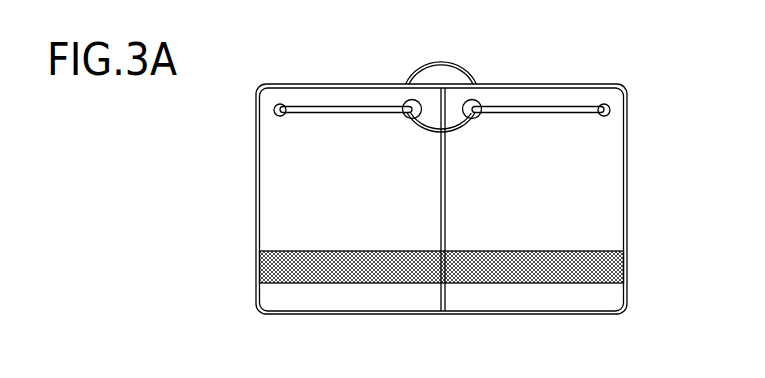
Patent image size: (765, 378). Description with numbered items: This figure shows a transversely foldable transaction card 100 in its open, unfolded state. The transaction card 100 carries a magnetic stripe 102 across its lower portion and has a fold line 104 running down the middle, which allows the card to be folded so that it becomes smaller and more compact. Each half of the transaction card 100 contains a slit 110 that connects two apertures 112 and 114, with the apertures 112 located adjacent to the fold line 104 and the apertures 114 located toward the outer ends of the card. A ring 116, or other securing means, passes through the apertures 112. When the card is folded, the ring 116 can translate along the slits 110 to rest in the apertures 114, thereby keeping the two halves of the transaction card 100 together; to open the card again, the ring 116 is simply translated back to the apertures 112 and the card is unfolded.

The transaction card 100 is at (580, 83).
The magnetic stripe 102 is at (350, 283).
The fold line 104 is at (445, 187).
The slit 110 is at (352, 116).
The aperture 112 is at (404, 102).
The aperture 114 is at (275, 108).
The ring 116 is at (440, 60).